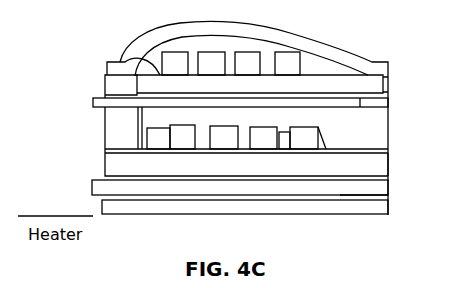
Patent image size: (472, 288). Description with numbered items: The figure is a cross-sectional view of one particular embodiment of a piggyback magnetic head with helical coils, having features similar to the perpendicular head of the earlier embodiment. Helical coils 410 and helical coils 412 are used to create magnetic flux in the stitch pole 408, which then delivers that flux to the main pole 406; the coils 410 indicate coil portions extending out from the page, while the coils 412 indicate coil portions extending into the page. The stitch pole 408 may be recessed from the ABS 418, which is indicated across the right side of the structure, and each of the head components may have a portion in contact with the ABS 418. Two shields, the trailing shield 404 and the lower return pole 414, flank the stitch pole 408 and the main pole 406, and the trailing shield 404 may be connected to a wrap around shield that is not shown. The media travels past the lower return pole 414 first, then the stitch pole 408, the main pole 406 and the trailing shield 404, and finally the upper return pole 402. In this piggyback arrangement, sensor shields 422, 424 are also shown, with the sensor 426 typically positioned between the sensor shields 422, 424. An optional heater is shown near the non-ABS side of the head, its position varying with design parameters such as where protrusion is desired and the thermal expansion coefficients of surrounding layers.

The upper return pole 402 is at (346, 45).
The trailing shield 404 is at (388, 84).
The main pole 406 is at (388, 103).
The stitch pole 408 is at (352, 107).
The helical coils 410 is at (120, 61).
The helical coils 412 is at (168, 122).
The lower return pole 414 is at (272, 172).
The ABS 418 is at (389, 155).
The sensor shield 422 is at (90, 181).
The sensor shield 424 is at (100, 207).
The sensor 426 is at (382, 196).